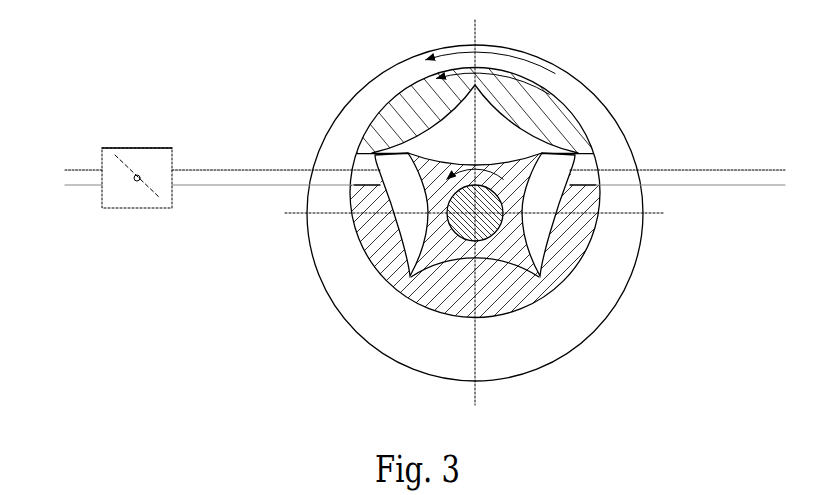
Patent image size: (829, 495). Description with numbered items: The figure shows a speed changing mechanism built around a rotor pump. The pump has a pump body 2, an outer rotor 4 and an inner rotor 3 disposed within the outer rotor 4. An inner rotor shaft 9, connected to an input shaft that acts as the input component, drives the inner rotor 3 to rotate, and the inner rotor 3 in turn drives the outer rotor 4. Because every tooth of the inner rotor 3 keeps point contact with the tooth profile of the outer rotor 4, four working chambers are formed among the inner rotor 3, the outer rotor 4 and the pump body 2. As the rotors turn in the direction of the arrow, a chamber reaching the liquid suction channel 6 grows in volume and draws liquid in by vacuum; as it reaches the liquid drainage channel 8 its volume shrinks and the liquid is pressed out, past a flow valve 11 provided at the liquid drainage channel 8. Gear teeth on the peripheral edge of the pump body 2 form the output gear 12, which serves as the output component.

The pump body 2 is at (517, 362).
The inner rotor 3 is at (432, 250).
The outer rotor 4 is at (558, 128).
The liquid suction channel 6 is at (627, 176).
The liquid drainage channel 8 is at (335, 178).
The inner rotor shaft 9 is at (462, 233).
The flow valve 11 is at (148, 160).
The output gear 12 is at (567, 70).